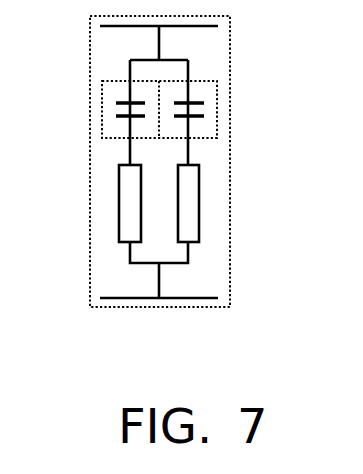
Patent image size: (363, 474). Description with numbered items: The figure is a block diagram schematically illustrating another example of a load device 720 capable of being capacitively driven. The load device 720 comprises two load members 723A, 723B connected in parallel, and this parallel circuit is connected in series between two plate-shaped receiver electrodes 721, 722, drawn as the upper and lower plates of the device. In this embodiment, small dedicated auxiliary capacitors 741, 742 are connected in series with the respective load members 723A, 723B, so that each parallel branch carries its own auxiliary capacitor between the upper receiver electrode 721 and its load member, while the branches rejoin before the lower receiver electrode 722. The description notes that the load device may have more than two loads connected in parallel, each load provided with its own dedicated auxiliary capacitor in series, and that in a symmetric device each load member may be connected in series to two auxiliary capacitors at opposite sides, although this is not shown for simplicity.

The load device 720 is at (230, 147).
The receiver electrode 721 is at (187, 27).
The receiver electrode 722 is at (208, 298).
The load member 723A is at (141, 176).
The load member 723B is at (199, 221).
The auxiliary capacitor 741 is at (102, 115).
The auxiliary capacitor 742 is at (217, 113).